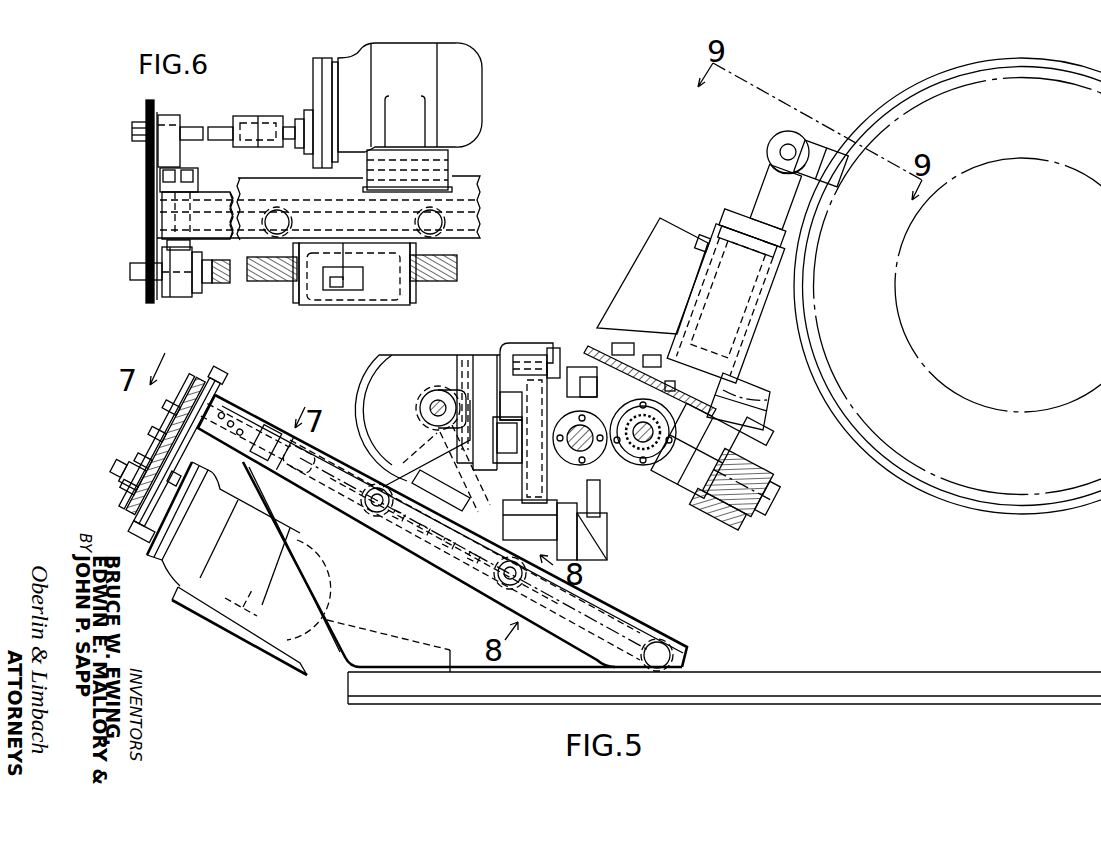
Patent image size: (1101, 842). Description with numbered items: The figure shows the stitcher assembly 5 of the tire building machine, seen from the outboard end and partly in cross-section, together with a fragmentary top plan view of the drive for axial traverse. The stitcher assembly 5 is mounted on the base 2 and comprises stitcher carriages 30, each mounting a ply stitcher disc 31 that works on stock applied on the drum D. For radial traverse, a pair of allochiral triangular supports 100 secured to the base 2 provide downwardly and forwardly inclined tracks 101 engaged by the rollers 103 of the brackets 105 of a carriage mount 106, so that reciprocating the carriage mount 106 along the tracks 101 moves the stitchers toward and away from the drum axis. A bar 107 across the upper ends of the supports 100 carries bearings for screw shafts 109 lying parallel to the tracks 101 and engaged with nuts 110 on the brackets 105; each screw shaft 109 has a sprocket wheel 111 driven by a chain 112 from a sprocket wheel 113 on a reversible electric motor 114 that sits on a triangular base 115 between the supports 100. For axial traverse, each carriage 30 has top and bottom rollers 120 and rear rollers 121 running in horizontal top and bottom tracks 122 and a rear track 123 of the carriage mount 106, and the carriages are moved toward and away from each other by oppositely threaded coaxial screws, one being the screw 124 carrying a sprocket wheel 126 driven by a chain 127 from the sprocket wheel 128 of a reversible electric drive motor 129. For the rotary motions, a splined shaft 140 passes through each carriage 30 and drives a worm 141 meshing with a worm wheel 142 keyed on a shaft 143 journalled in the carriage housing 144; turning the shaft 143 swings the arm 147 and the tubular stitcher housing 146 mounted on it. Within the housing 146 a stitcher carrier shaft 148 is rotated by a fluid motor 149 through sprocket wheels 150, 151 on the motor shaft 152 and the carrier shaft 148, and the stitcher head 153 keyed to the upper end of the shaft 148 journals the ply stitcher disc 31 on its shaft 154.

In FIG. 5, the base 2 is at (884, 672).
In FIG. 5, the stitcher assembly 5 is at (637, 609).
In FIG. 5, the stitcher carriage 30 is at (770, 476).
In FIG. 5, the ply stitcher disc 31 is at (770, 141).
In FIG. 5, the triangular support 100 is at (435, 625).
In FIG. 5, the track 101 is at (657, 628).
In FIG. 5, the roller 103 is at (370, 528).
In FIG. 5, the bracket 105 is at (478, 450).
In FIG. 6, the carriage mount 106 is at (470, 234).
In FIG. 5, the carriage mount 106 is at (535, 343).
In FIG. 5, the bar 107 is at (233, 405).
In FIG. 5, the screw shaft 109 is at (212, 390).
In FIG. 5, the nut 110 is at (420, 567).
In FIG. 5, the sprocket wheel 111 is at (220, 371).
In FIG. 5, the chain 112 is at (163, 437).
In FIG. 5, the sprocket wheel 113 is at (140, 498).
In FIG. 5, the reversible electric motor 114 is at (248, 581).
In FIG. 5, the triangular base 115 is at (281, 662).
In FIG. 6, the top and bottom rollers 120 is at (290, 222).
In FIG. 5, the top and bottom rollers 120 is at (522, 358).
In FIG. 5, the rear roller 121 is at (420, 411).
In FIG. 5, the top and bottom tracks 122 is at (543, 350).
In FIG. 5, the rear track 123 is at (505, 425).
In FIG. 6, the screw 124 is at (258, 282).
In FIG. 5, the screw 124 is at (587, 422).
In FIG. 6, the sprocket wheel 126 is at (150, 299).
In FIG. 6, the chain 127 is at (148, 207).
In FIG. 6, the sprocket wheel 128 is at (148, 155).
In FIG. 6, the reversible electric drive motor 129 is at (419, 52).
In FIG. 5, the reversible electric drive motor 129 is at (378, 362).
In FIG. 5, the splined shaft 140 is at (640, 437).
In FIG. 5, the worm 141 is at (648, 445).
In FIG. 5, the worm wheel 142 is at (752, 505).
In FIG. 5, the shaft 143 is at (742, 435).
In FIG. 5, the carriage housing 144 is at (735, 525).
In FIG. 5, the tubular stitcher housing 146 is at (727, 348).
In FIG. 5, the arm 147 is at (745, 396).
In FIG. 5, the stitcher carrier shaft 148 is at (768, 196).
In FIG. 5, the fluid motor 149 is at (650, 242).
In FIG. 5, the sprocket wheel 150 is at (618, 352).
In FIG. 5, the sprocket wheel 151 is at (752, 420).
In FIG. 5, the motor shaft 152 is at (633, 342).
In FIG. 5, the stitcher head 153 is at (818, 147).
In FIG. 5, the shaft 154 is at (788, 145).
In FIG. 5, the drum D is at (1038, 57).